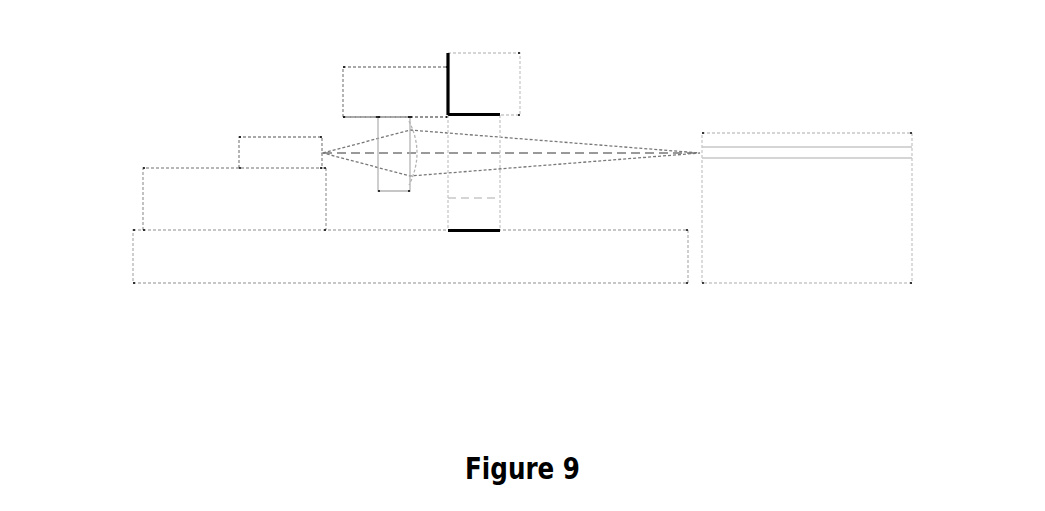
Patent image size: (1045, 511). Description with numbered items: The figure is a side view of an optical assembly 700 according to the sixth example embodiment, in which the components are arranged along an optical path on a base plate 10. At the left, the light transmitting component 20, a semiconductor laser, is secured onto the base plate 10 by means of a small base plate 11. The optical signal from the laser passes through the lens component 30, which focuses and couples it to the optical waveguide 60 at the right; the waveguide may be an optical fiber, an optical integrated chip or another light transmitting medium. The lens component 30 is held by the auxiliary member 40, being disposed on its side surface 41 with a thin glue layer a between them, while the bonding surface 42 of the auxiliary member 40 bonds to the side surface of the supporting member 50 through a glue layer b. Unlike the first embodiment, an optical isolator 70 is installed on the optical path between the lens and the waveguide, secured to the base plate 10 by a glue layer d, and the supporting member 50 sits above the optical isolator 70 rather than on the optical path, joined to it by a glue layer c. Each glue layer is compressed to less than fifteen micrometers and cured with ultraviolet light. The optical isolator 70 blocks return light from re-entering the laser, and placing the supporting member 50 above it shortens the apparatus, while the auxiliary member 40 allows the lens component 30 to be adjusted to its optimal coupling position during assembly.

The optical assembly 700 is at (86, 38).
The base plate 10 is at (203, 265).
The small base plate 11 is at (207, 178).
The light transmitting component 20 is at (275, 146).
The lens component 30 is at (397, 175).
The auxiliary member 40 is at (354, 80).
The side surface 41 is at (360, 117).
The bonding surface 42 is at (446, 92).
The glue layer a is at (394, 115).
The glue layer b is at (447, 54).
The glue layer c is at (503, 114).
The glue layer d is at (477, 232).
The supporting member 50 is at (492, 63).
The optical waveguide 60 is at (738, 143).
The optical isolator 70 is at (493, 188).